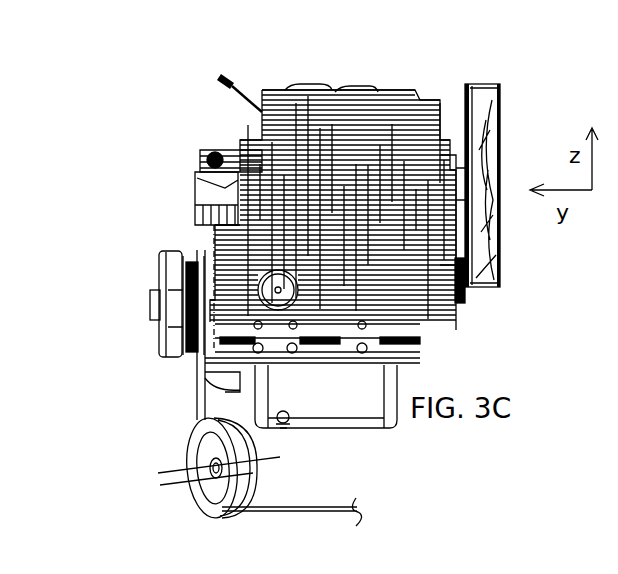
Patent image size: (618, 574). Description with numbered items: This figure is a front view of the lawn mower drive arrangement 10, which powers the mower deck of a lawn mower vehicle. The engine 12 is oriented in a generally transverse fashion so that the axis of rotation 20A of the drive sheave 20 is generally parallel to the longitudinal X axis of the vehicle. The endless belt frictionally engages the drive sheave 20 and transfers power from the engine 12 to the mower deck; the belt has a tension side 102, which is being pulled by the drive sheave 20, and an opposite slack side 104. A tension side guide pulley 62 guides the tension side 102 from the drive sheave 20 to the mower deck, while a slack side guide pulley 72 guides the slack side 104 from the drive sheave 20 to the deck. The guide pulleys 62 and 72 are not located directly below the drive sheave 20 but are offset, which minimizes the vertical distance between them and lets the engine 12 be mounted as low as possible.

The lawn mower drive arrangement 10 is at (152, 429).
The engine 12 is at (328, 66).
The drive sheave 20 is at (192, 268).
The axis of rotation 20A is at (96, 330).
The tension side guide pulley 62 is at (207, 503).
The slack side guide pulley 72 is at (250, 455).
The tension side 102 is at (262, 492).
The slack side 104 is at (342, 502).